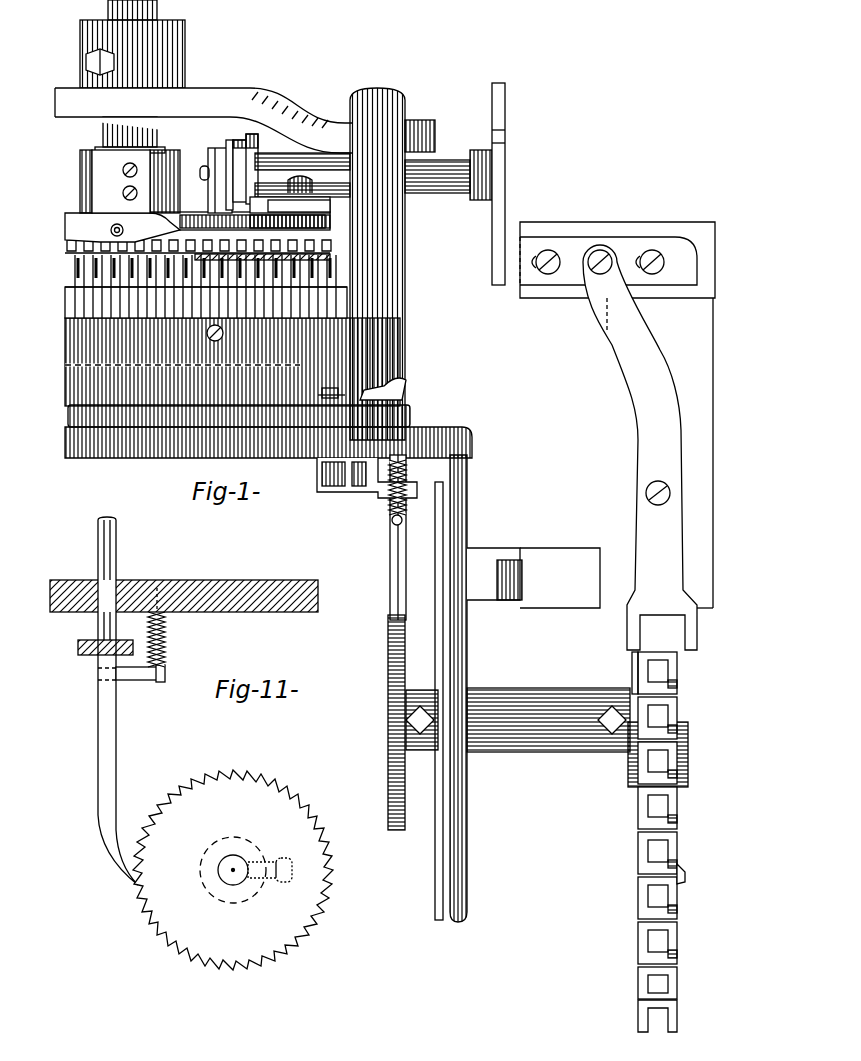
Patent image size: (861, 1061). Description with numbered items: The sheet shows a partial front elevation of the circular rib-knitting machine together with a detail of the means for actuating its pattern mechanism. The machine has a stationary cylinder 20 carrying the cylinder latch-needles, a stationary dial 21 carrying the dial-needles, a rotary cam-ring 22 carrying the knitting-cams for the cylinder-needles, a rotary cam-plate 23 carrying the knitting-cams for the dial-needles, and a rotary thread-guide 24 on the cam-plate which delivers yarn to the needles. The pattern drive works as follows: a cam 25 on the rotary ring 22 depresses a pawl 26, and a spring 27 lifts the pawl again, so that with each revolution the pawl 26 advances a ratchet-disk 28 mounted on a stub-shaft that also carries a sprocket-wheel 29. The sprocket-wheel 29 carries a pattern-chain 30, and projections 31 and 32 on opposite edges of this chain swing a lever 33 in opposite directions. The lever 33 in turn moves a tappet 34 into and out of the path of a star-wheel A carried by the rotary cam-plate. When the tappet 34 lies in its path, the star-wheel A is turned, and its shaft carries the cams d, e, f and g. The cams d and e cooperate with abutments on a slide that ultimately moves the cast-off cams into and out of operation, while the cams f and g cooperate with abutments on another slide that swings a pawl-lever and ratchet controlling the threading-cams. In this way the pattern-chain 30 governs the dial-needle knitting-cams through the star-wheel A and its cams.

In FIG. 1, the stationary cylinder 20 is at (67, 298).
In FIG. 1, the stationary dial 21 is at (67, 251).
In FIG. 1, the rotary cam-ring 22 is at (67, 384).
In FIG. 1, the rotary cam-plate 23 is at (67, 218).
In FIG. 1, the rotary thread-guide 24 is at (132, 232).
In FIG. 1, the cam 25 is at (67, 364).
In FIG. 1, the pawl 26 is at (408, 393).
In FIG. 11, the pawl 26 is at (98, 736).
In FIG. 1, the spring 27 is at (388, 503).
In FIG. 11, the spring 27 is at (168, 644).
In FIG. 1, the ratchet-disk 28 is at (388, 649).
In FIG. 11, the ratchet-disk 28 is at (140, 908).
In FIG. 1, the sprocket-wheel 29 is at (688, 762).
In FIG. 1, the pattern-chain 30 is at (640, 916).
In FIG. 1, the projection 31 is at (635, 690).
In FIG. 1, the projection 32 is at (686, 880).
In FIG. 1, the lever 33 is at (668, 462).
In FIG. 1, the tappet 34 is at (511, 280).
In FIG. 1, the star-wheel A is at (505, 116).
In FIG. 1, the cam d is at (255, 136).
In FIG. 1, the cam e is at (240, 140).
In FIG. 1, the cam f is at (228, 178).
In FIG. 1, the cam g is at (210, 149).